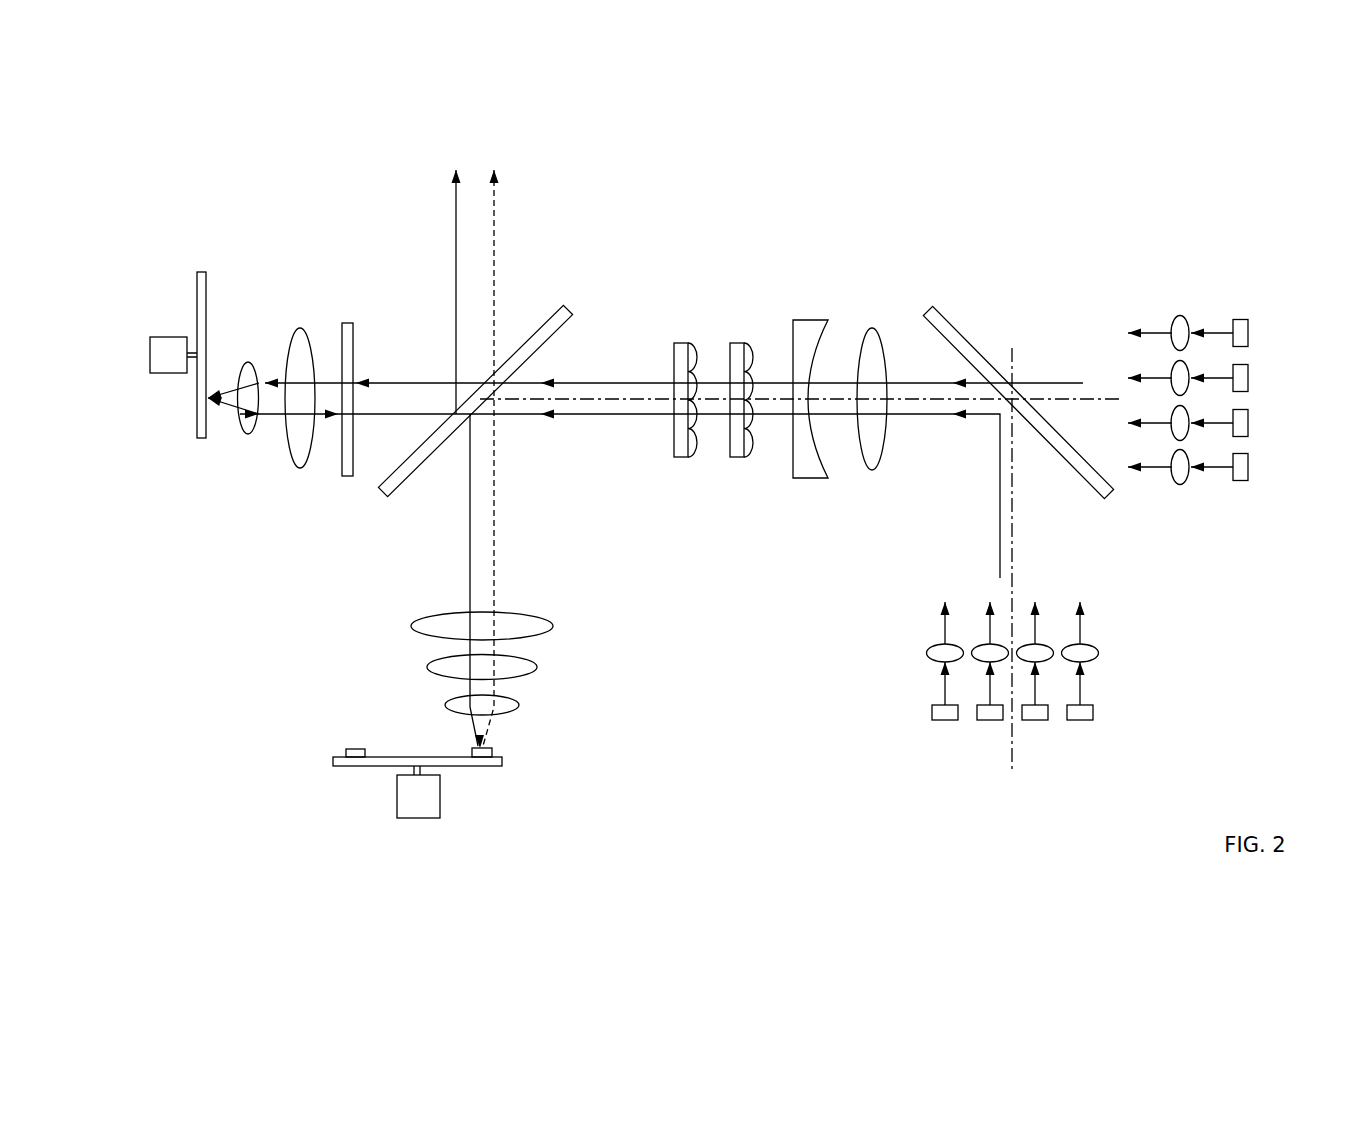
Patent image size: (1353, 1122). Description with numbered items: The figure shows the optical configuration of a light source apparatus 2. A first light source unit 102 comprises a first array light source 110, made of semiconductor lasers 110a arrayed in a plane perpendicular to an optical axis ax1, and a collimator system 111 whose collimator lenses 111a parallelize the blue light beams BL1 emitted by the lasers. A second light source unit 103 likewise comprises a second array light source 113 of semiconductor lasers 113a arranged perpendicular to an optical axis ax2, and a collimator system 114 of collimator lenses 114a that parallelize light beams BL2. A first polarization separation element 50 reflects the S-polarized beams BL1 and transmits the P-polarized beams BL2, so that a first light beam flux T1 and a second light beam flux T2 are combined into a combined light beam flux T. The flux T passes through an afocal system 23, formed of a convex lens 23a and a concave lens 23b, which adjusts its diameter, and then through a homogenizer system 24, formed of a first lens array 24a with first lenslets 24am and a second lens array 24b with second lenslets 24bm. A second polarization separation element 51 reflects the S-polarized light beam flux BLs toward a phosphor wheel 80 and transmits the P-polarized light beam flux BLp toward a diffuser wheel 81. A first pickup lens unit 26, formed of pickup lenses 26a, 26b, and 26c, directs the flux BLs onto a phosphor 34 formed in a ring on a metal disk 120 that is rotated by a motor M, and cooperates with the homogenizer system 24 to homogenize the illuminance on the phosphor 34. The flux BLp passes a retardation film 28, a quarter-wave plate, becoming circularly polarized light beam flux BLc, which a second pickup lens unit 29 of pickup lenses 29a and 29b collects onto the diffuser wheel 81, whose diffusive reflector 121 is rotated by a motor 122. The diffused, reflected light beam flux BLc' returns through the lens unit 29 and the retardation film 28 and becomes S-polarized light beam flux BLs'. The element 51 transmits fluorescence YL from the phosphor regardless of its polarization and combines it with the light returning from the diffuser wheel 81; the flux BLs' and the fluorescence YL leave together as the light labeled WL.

The light source apparatus 2 is at (1094, 173).
The diffuser wheel 81 is at (210, 307).
The diffusive reflector 121 is at (207, 306).
The motor 122 is at (168, 337).
The second pickup lens unit 29 is at (250, 447).
The pickup lens 29a is at (288, 440).
The pickup lens 29b is at (243, 425).
The retardation film 28 is at (347, 323).
The second polarization separation element 51 is at (541, 335).
The homogenizer system 24 is at (719, 369).
The first lens array 24a is at (746, 391).
The second lens array 24b is at (682, 391).
The first lenslet 24am is at (745, 457).
The second lenslet 24bm is at (688, 457).
The afocal system 23 is at (832, 347).
The convex lens 23a is at (858, 364).
The concave lens 23b is at (808, 328).
The first polarization separation element 50 is at (945, 308).
The second light source unit 103 is at (1211, 366).
The collimator system 114 is at (1165, 384).
The collimator lens 114a is at (1180, 487).
The second array light source 113 is at (1253, 387).
The semiconductor laser 113a is at (1240, 478).
The first light source unit 102 is at (1044, 672).
The collimator system 111 is at (1015, 651).
The collimator lens 111a is at (925, 655).
The first array light source 110 is at (1015, 722).
The semiconductor laser 110a is at (930, 712).
The first pickup lens unit 26 is at (562, 678).
The pickup lens 26a is at (543, 626).
The pickup lens 26b is at (525, 666).
The pickup lens 26c is at (509, 712).
The phosphor wheel 80 is at (409, 783).
The disk 120 is at (348, 762).
The phosphor 34 is at (352, 750).
The motor M is at (405, 806).
The combined light beam flux T is at (577, 375).
The first light beam flux T1 is at (990, 418).
The second light beam flux T2 is at (975, 388).
The light beam BL1 is at (940, 688).
The light beam BL2 is at (1212, 470).
The light beam flux BLs is at (426, 581).
The light beam flux BLs' is at (457, 335).
The light beam flux BLp is at (419, 381).
The light beam flux BLc is at (312, 324).
The light beam flux BLc' is at (325, 472).
The fluorescence YL is at (496, 198).
The white light WL is at (584, 112).
The optical axis ax1 is at (1016, 752).
The optical axis ax2 is at (1097, 399).